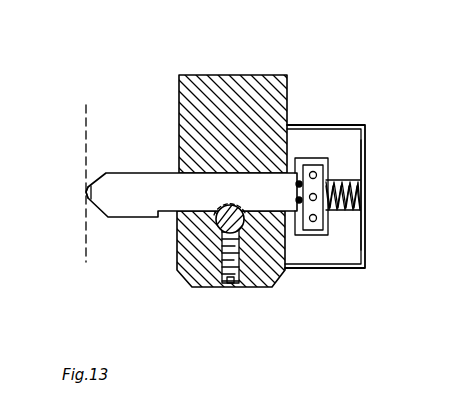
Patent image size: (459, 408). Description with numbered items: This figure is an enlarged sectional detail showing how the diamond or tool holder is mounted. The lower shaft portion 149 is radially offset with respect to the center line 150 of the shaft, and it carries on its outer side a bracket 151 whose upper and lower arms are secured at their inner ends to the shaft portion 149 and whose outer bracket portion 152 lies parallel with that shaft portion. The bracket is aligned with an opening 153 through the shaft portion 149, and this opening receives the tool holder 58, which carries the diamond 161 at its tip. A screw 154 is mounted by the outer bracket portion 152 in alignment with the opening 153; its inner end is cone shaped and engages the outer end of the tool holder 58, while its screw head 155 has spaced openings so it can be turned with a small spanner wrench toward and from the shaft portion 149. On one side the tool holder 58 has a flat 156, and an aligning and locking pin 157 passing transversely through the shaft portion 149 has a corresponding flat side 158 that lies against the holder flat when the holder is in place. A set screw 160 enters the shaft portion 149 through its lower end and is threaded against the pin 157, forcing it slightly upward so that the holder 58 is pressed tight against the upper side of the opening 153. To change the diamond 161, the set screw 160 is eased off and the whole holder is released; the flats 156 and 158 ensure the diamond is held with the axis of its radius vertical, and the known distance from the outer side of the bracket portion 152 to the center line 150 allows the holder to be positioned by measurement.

The lower shaft portion 149 is at (241, 70).
The center line of the shaft 150 is at (86, 133).
The bracket 151 is at (342, 275).
The outer bracket portion 152 is at (357, 242).
The opening 153 is at (180, 173).
The screw 154 is at (345, 180).
The screw head 155 is at (313, 165).
The flat 156 is at (290, 215).
The aligning and locking pin 157 is at (230, 209).
The flat side of pin 158 is at (200, 240).
The set screw 160 is at (222, 283).
The diamond 161 is at (86, 192).
The tool holder 58 is at (294, 175).